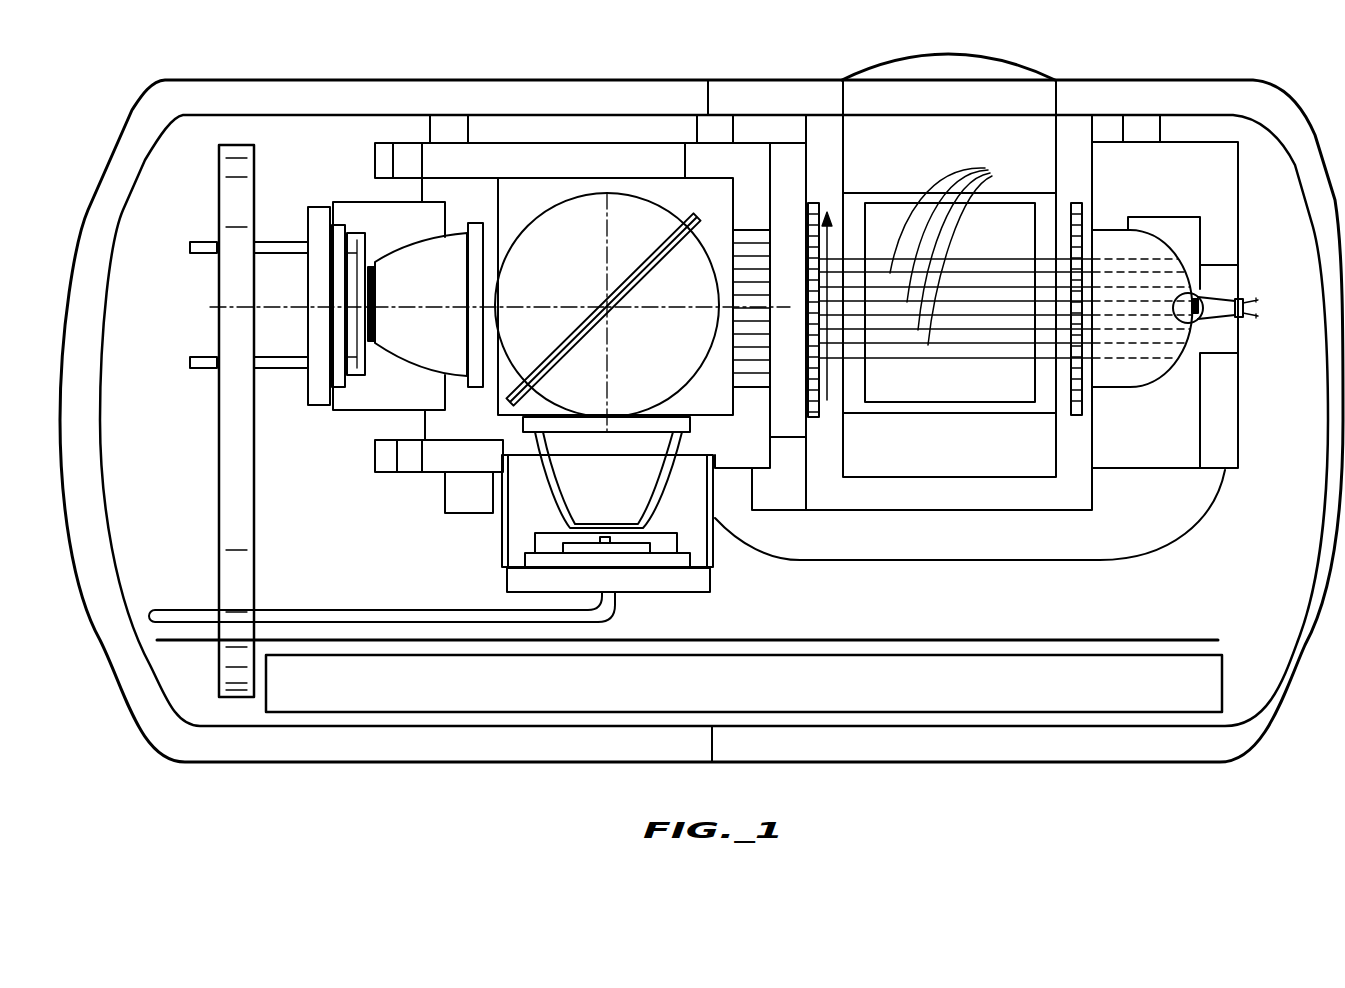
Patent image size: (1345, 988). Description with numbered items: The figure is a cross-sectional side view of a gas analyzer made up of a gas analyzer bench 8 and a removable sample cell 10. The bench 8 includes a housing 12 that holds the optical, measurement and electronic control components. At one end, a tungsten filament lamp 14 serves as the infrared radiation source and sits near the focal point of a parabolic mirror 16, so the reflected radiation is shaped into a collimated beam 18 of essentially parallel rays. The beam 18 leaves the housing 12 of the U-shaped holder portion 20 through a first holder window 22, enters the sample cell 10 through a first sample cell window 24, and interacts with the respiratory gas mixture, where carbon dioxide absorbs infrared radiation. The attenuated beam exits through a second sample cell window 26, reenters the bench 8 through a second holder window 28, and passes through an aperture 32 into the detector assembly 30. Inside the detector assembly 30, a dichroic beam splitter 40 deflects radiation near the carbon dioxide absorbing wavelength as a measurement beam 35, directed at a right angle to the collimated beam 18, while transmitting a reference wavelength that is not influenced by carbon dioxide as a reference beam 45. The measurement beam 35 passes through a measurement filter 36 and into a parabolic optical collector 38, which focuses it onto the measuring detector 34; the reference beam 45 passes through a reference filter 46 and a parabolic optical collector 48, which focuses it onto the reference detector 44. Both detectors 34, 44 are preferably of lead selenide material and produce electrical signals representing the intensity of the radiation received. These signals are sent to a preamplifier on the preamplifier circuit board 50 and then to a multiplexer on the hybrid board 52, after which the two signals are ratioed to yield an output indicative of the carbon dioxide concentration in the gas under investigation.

The gas analyzer bench 8 is at (482, 80).
The removable sample cell 10 is at (947, 52).
The housing 12 is at (478, 755).
The tungsten filament lamp 14 is at (1212, 292).
The parabolic mirror 16 is at (1157, 236).
The collimated beam 18 is at (954, 252).
The U-shaped holder portion 20 is at (975, 528).
The first holder window 22 is at (1083, 395).
The first sample cell window 24 is at (1025, 380).
The second sample cell window 26 is at (879, 375).
The second holder window 28 is at (810, 205).
The detector assembly 30 is at (586, 248).
The aperture 32 is at (757, 230).
The measuring detector 34 is at (570, 552).
The measurement beam 35 is at (607, 357).
The measurement filter 36 is at (700, 424).
The parabolic optical collector 38 is at (665, 497).
The dichroic beam splitter 40 is at (633, 288).
The reference detector 44 is at (357, 342).
The reference beam 45 is at (571, 302).
The reference filter 46 is at (483, 218).
The parabolic optical collector 48 is at (397, 255).
The preamplifier circuit board 50 is at (219, 495).
The hybrid board 52 is at (911, 712).